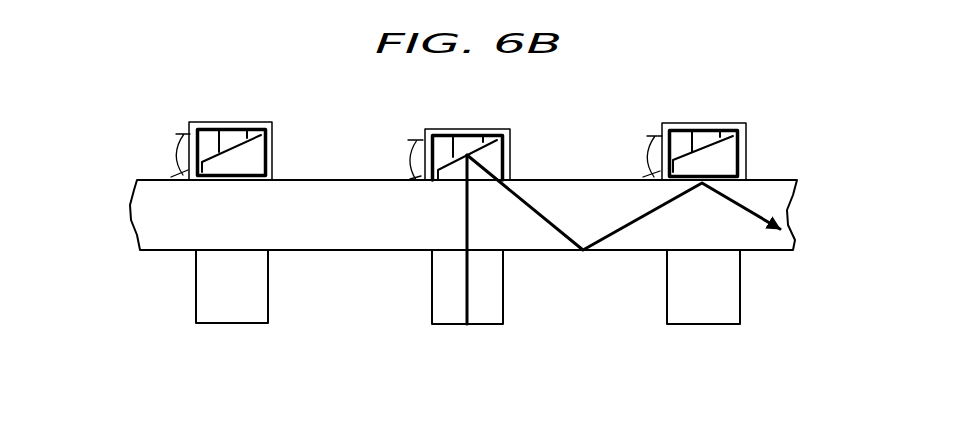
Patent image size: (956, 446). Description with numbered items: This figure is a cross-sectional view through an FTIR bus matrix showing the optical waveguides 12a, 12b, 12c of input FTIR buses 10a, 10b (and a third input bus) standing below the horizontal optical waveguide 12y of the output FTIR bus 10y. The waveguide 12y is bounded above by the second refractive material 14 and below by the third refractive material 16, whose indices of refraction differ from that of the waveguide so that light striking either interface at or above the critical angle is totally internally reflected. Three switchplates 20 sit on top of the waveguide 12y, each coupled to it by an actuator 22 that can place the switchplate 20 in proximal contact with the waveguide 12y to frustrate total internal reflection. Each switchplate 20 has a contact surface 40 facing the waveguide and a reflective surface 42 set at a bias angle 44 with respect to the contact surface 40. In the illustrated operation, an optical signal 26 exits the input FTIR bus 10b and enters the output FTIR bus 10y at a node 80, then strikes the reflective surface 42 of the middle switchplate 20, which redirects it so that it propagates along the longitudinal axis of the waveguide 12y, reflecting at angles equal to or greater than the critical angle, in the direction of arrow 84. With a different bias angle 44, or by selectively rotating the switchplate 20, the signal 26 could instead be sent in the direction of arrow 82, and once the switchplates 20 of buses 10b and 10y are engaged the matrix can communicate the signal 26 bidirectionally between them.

The second refractive material 14 is at (112, 128).
The third refractive material 16 is at (112, 326).
The optical waveguide 12y is at (348, 227).
The output FTIR bus 10y is at (323, 260).
The input FTIR bus 10a is at (223, 336).
The input FTIR bus 10b is at (460, 336).
The optical waveguide 12a is at (196, 281).
The optical waveguide 12b is at (432, 281).
The optical waveguide 12c is at (667, 282).
The switchplate 20 is at (272, 157).
The actuator 22 is at (215, 122).
The optical signal 26 is at (471, 222).
The contact surface 40 is at (232, 182).
The reflective surface 42 is at (234, 141).
The bias angle 44 is at (177, 157).
The node 80 is at (470, 255).
The arrow 82 is at (122, 216).
The arrow 84 is at (798, 218).